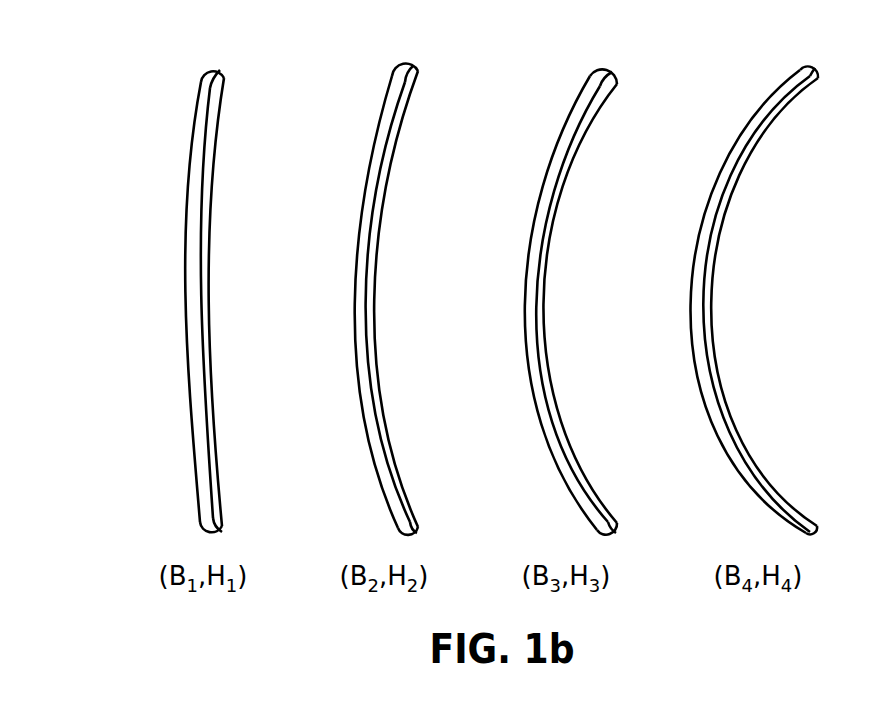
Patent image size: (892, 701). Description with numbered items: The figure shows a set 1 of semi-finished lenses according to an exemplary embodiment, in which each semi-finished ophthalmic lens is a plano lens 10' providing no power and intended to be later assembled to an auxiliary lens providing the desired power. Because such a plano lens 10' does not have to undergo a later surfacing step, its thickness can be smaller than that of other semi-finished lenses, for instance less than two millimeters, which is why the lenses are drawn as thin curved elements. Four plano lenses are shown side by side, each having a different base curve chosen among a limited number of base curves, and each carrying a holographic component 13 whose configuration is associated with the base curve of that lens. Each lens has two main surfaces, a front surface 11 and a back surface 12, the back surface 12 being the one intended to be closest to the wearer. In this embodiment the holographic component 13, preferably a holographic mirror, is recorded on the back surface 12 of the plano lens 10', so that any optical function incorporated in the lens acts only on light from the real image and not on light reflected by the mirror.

The set of semi-finished lenses 1 is at (143, 176).
The plano lens 10' is at (252, 299).
The front surface 11 is at (564, 95).
The back surface 12 is at (616, 90).
The holographic component 13 is at (228, 126).